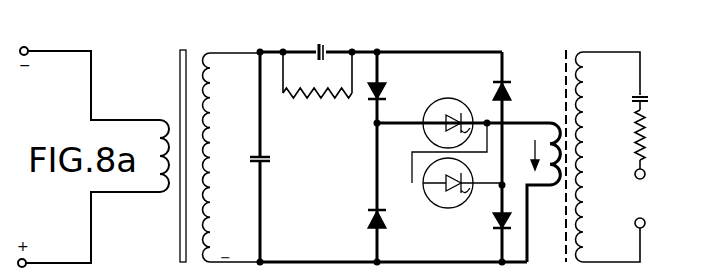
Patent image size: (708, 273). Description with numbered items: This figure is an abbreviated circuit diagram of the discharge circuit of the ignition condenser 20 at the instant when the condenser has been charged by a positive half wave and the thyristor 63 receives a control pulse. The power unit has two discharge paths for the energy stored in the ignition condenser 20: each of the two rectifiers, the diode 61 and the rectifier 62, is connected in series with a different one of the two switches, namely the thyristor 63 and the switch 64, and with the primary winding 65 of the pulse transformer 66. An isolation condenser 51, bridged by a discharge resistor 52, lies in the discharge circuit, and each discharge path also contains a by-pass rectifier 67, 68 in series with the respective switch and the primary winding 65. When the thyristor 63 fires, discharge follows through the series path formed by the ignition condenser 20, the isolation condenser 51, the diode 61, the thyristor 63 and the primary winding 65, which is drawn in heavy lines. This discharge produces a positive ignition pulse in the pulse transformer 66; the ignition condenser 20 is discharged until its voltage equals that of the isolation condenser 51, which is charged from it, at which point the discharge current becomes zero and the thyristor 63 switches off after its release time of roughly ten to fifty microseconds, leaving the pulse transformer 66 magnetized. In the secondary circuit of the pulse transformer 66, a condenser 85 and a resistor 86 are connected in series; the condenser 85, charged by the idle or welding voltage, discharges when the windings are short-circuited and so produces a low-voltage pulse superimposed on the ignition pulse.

The ignition condenser 20 is at (270, 159).
The isolation condenser 51 is at (318, 44).
The discharge resistor 52 is at (341, 98).
The diode 61 is at (385, 82).
The rectifier 62 is at (507, 83).
The thyristor 63 is at (440, 100).
The switch 64 is at (440, 209).
The primary winding 65 is at (549, 200).
The pulse transformer 66 is at (568, 55).
The by-pass rectifier 67 is at (369, 215).
The by-pass rectifier 68 is at (493, 222).
The condenser 85 is at (639, 94).
The resistor 86 is at (633, 124).